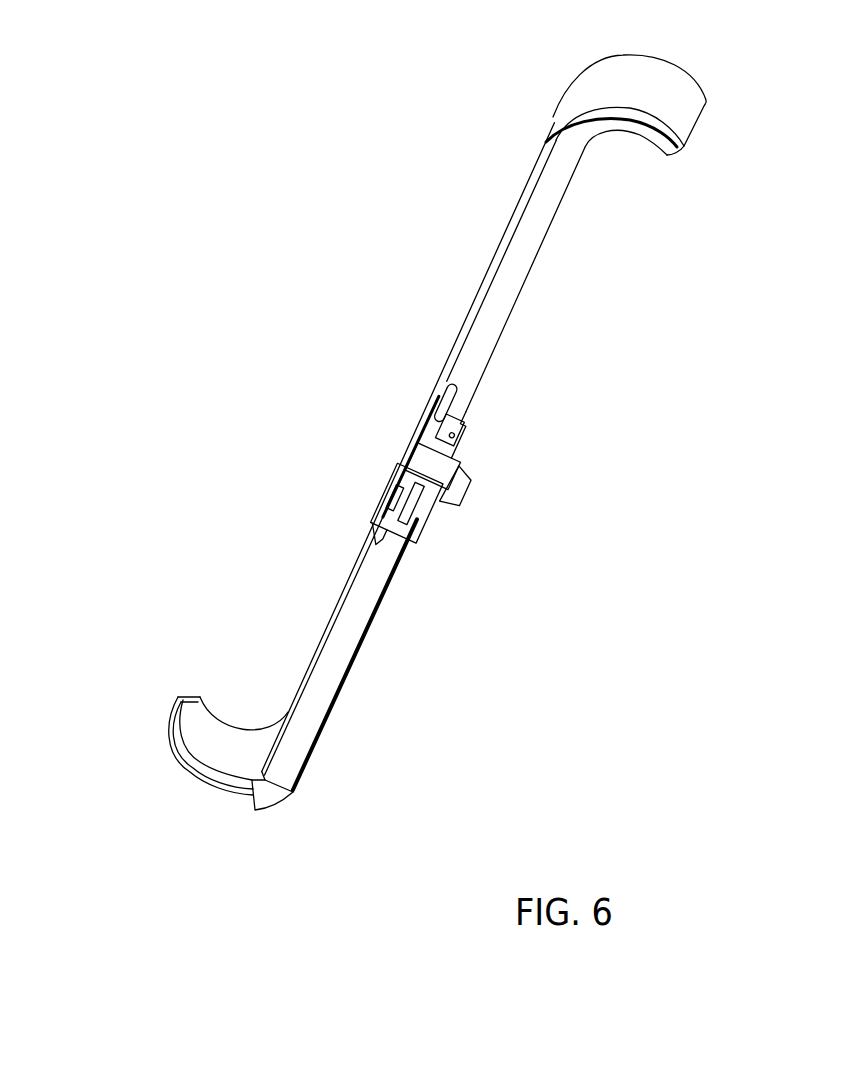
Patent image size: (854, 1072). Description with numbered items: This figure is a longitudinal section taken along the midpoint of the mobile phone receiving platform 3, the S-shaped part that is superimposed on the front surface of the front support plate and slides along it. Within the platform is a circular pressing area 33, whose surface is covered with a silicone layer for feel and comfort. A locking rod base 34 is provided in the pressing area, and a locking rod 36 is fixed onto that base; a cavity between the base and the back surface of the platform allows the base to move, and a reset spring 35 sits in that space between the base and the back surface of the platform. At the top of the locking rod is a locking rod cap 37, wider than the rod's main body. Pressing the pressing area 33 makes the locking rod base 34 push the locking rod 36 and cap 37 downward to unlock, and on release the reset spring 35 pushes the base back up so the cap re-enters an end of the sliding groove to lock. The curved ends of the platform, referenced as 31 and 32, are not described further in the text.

The mobile phone receiving platform 3 is at (517, 192).
The upper hook 31 is at (645, 83).
The lower hook 32 is at (213, 773).
The circular pressing area 33 is at (397, 463).
The locking rod base 34 is at (437, 422).
The reset spring 35 is at (445, 430).
The locking rod 36 is at (437, 467).
The locking rod cap 37 is at (460, 503).